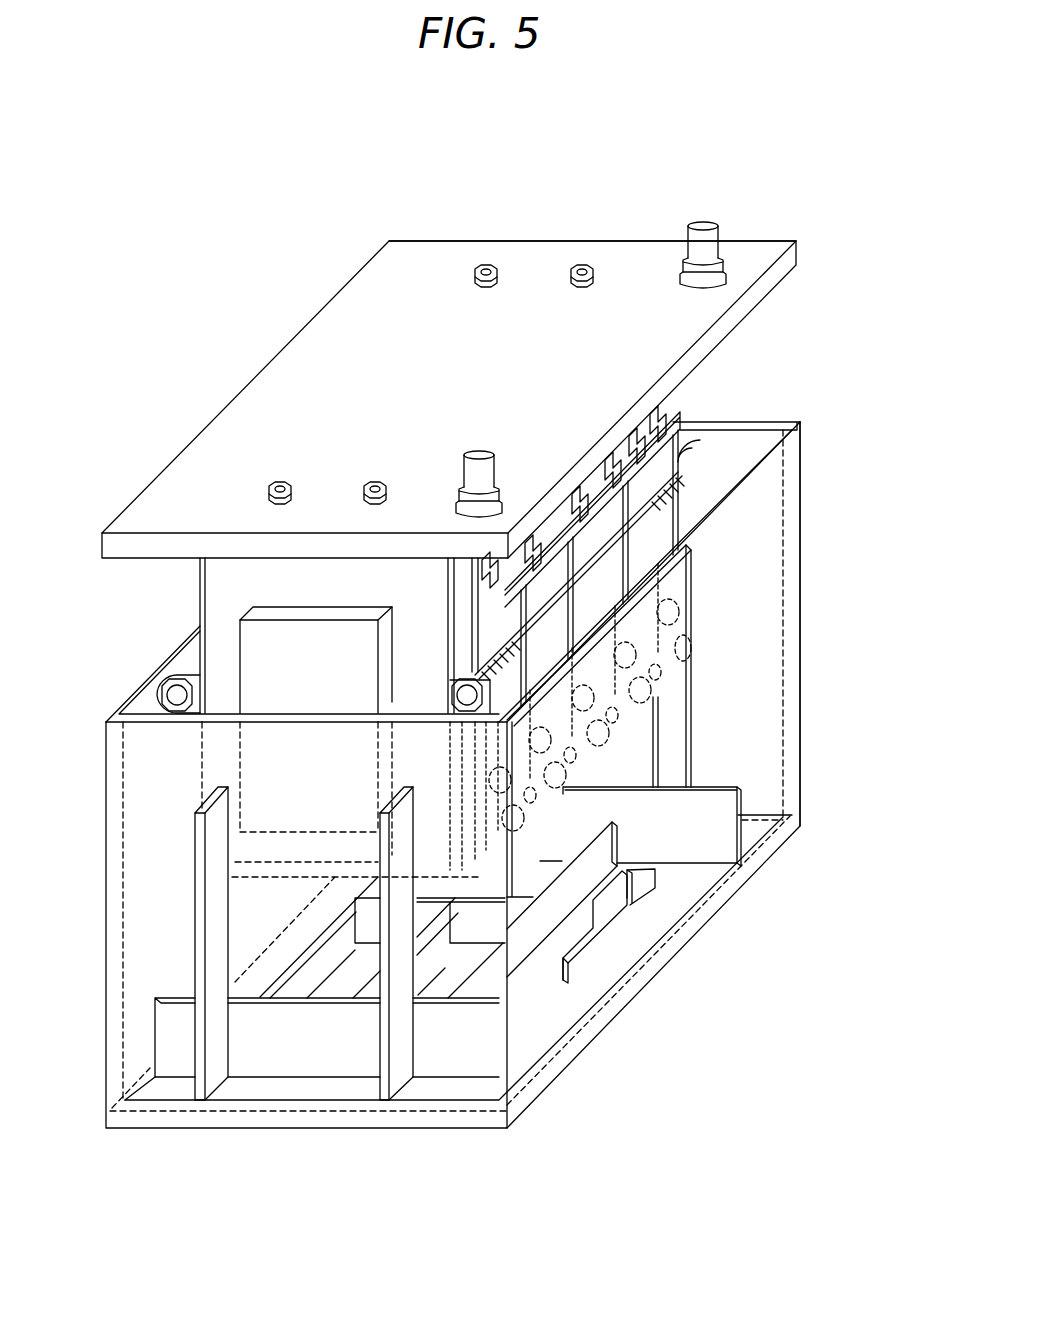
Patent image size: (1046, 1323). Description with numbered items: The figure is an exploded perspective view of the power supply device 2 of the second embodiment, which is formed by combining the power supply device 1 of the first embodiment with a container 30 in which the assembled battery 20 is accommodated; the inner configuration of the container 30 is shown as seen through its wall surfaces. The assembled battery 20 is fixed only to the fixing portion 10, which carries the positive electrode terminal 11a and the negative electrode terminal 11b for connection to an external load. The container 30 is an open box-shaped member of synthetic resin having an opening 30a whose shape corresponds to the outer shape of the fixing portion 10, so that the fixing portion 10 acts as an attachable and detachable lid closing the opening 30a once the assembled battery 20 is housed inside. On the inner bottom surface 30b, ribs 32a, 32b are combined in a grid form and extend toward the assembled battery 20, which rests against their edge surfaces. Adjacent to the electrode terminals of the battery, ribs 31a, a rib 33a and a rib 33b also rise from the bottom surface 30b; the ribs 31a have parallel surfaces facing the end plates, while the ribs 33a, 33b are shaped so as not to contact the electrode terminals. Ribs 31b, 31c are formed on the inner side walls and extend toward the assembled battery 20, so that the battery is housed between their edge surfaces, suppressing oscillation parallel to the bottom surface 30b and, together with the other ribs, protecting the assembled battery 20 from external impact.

The power supply device 1 is at (578, 225).
The power supply device 2 is at (702, 113).
The fixing portion 10 is at (292, 337).
The positive electrode terminal 11a is at (720, 230).
The negative electrode terminal 11b is at (493, 462).
The assembled battery 20 is at (200, 590).
The container 30 is at (800, 533).
The opening 30a is at (737, 445).
The bottom surface 30b is at (758, 825).
The ribs 31a is at (725, 838).
The rib 31b is at (383, 917).
The rib 31c is at (680, 723).
The rib 32a is at (517, 958).
The rib 32b is at (473, 927).
The rib 33a is at (603, 917).
The rib 33b is at (650, 887).